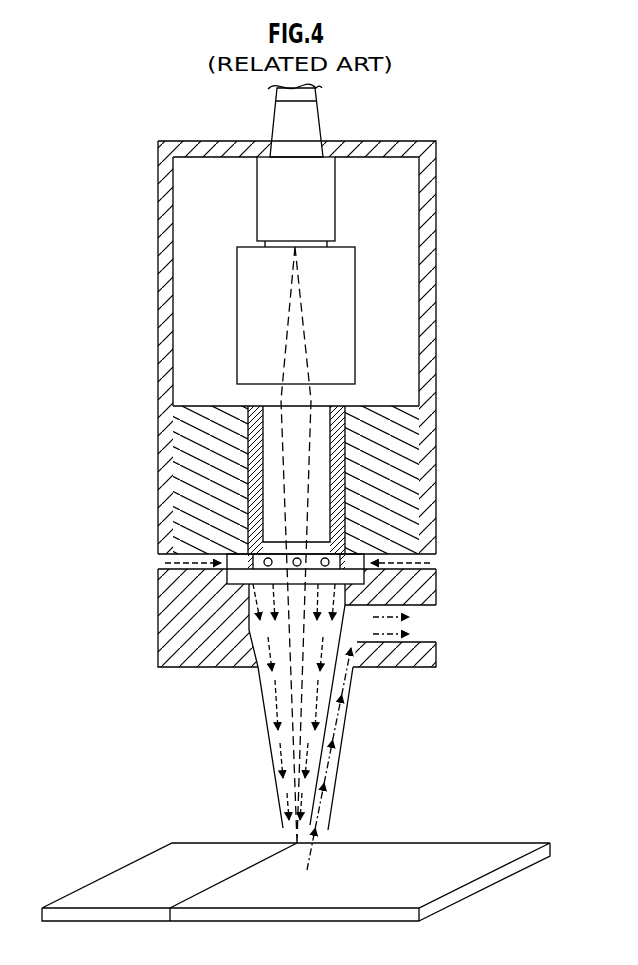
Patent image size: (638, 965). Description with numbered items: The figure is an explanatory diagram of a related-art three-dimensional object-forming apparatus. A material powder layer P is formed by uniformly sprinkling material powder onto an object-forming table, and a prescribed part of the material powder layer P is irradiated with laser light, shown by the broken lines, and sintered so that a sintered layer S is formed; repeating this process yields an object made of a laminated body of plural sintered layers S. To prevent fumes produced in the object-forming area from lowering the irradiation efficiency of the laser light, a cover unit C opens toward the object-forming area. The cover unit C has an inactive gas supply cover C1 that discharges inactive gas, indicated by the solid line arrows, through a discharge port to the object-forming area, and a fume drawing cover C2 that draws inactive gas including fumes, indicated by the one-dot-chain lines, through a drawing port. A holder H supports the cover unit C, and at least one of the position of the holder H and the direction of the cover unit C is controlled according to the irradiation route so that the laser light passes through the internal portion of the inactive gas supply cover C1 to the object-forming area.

The holder H is at (436, 237).
The cover unit C is at (270, 763).
The inactive gas supply cover C1 is at (277, 732).
The fume drawing cover C2 is at (342, 727).
The sintered layer S is at (426, 866).
The material powder layer P is at (160, 877).